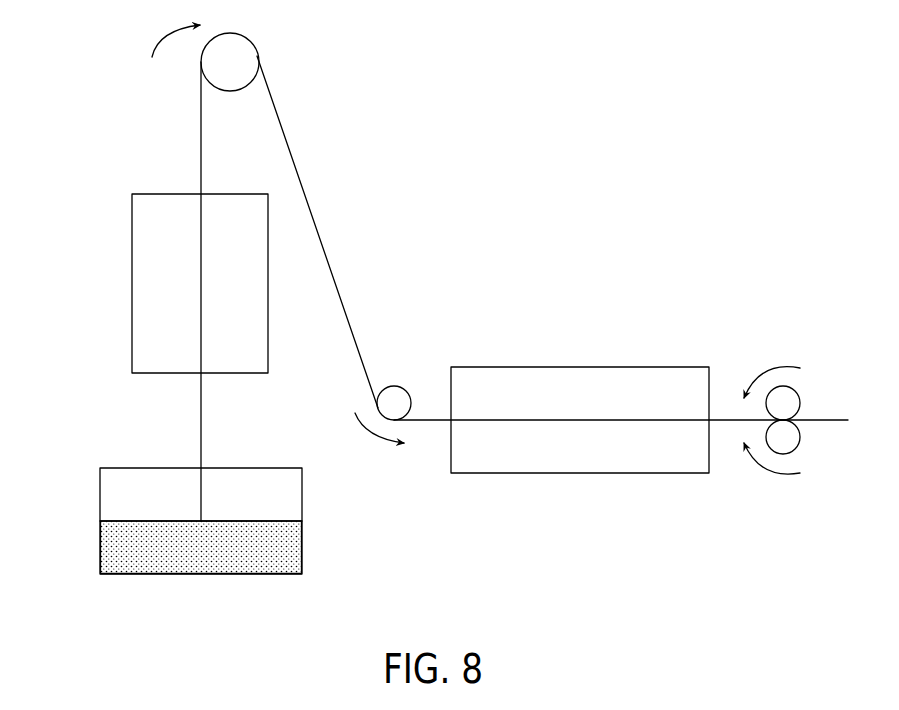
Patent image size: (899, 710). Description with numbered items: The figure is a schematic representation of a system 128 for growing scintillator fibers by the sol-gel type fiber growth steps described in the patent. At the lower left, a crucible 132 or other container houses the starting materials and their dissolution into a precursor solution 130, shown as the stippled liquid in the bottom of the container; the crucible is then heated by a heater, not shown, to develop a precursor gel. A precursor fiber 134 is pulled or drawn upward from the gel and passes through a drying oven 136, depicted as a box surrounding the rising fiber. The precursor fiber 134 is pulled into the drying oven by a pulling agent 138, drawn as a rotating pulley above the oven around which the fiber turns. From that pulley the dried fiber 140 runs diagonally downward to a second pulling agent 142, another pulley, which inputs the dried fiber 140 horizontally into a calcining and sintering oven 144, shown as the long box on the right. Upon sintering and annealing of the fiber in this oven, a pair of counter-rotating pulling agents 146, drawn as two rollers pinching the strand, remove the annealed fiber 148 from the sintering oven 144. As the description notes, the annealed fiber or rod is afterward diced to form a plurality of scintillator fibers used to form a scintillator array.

The system 128 is at (60, 569).
The precursor solution 130 is at (288, 545).
The crucible 132 is at (100, 532).
The precursor fiber 134 is at (201, 417).
The drying oven 136 is at (130, 352).
The pulling agent 138 is at (230, 61).
The dried fiber 140 is at (318, 232).
The pulling agent 142 is at (395, 402).
The calcining and sintering oven 144 is at (580, 367).
The pulling agents 146 is at (782, 402).
The annealed fiber 148 is at (832, 418).